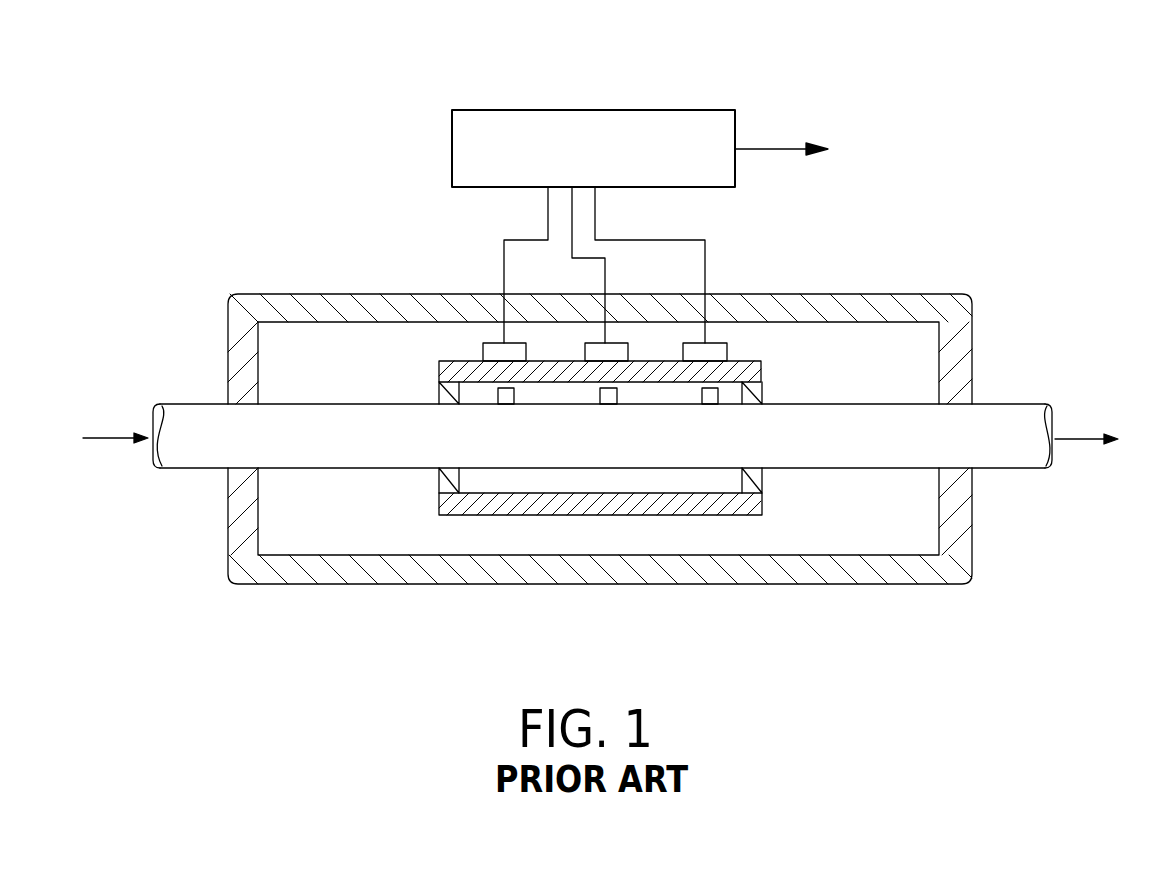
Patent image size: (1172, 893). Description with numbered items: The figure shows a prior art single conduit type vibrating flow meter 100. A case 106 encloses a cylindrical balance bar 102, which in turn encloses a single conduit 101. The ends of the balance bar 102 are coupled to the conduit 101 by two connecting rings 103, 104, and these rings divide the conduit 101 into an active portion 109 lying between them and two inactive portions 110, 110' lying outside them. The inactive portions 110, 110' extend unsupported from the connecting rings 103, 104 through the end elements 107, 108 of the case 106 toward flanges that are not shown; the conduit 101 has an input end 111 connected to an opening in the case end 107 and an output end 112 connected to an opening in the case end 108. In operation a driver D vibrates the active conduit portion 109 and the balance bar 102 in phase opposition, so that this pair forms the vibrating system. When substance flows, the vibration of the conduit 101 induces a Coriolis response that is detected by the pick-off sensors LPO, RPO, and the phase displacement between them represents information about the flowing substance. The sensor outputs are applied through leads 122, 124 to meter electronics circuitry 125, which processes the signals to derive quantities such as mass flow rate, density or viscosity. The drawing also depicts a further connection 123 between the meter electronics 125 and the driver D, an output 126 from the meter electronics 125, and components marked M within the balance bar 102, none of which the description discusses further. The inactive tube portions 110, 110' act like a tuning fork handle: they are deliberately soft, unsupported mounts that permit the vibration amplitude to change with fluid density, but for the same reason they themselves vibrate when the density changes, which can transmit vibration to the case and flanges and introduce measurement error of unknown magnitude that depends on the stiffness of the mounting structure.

The flow meter 100 is at (212, 124).
The conduit 101 is at (198, 445).
The balance bar 102 is at (597, 453).
The connecting ring 103 is at (438, 397).
The connecting ring 104 is at (762, 392).
The case 106 is at (597, 486).
The end element 107 is at (228, 345).
The end element 108 is at (975, 333).
The active portion 109 is at (590, 452).
The inactive portion 110 is at (344, 558).
The inactive portion 110' is at (896, 500).
The input end 111 is at (101, 437).
The output end 112 is at (1080, 443).
The lead 122 is at (503, 258).
The driver lead 123 is at (605, 270).
The lead 124 is at (707, 243).
The meter electronics circuitry 125 is at (500, 110).
The output path 126 is at (780, 150).
The pick-off sensor LPO is at (485, 352).
The pick-off sensor RPO is at (730, 353).
The driver D is at (607, 355).
The magnet M is at (700, 397).